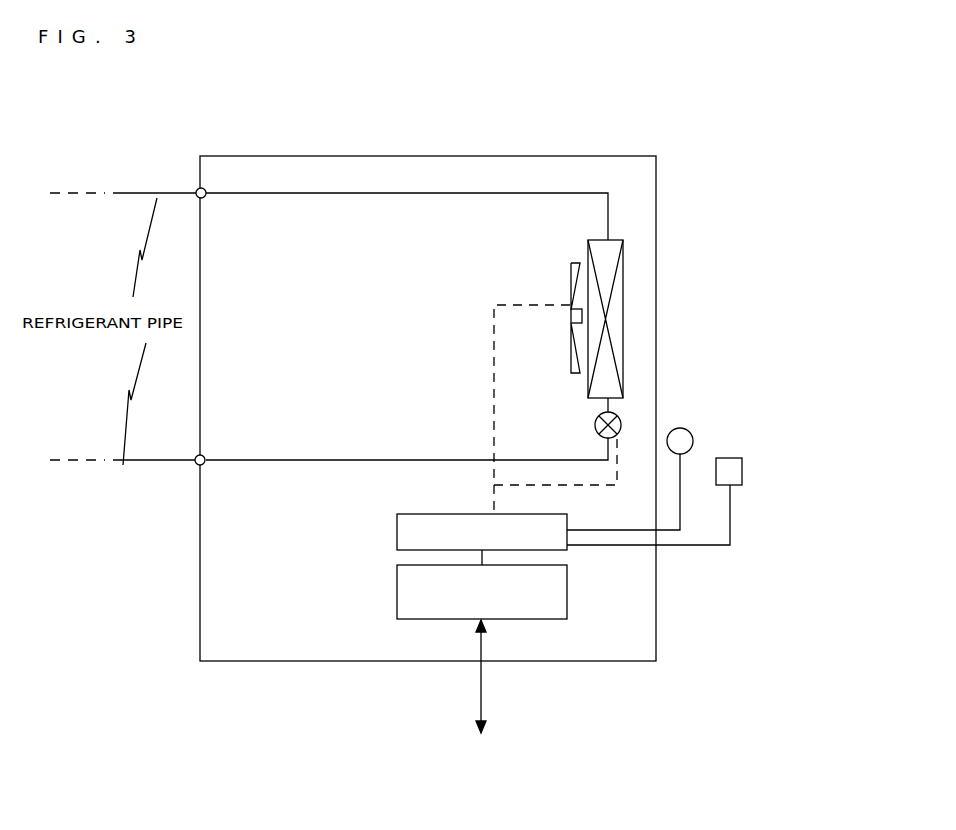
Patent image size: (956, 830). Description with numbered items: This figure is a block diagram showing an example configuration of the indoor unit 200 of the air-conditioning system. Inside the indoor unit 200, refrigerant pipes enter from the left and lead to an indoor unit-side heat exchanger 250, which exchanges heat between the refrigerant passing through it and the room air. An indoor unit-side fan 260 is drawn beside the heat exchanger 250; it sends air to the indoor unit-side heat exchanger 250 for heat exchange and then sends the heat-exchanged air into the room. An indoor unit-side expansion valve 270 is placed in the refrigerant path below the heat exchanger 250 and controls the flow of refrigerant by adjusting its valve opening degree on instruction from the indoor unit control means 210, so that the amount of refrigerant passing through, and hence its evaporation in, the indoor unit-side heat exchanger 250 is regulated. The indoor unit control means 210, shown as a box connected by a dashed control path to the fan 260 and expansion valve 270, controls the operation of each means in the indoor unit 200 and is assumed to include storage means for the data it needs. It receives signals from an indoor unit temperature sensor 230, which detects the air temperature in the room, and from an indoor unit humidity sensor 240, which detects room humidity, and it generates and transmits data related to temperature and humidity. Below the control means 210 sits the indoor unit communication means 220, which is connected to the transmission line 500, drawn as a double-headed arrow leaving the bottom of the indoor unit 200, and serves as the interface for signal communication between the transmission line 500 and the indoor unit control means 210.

The indoor unit 200 is at (200, 641).
The indoor unit control means 210 is at (566, 550).
The indoor unit communication means 220 is at (534, 619).
The indoor unit temperature sensor 230 is at (746, 450).
The indoor unit humidity sensor 240 is at (695, 425).
The indoor unit-side heat exchanger 250 is at (592, 242).
The indoor unit-side fan 260 is at (571, 342).
The indoor unit-side expansion valve 270 is at (595, 430).
The transmission line 500 is at (485, 662).